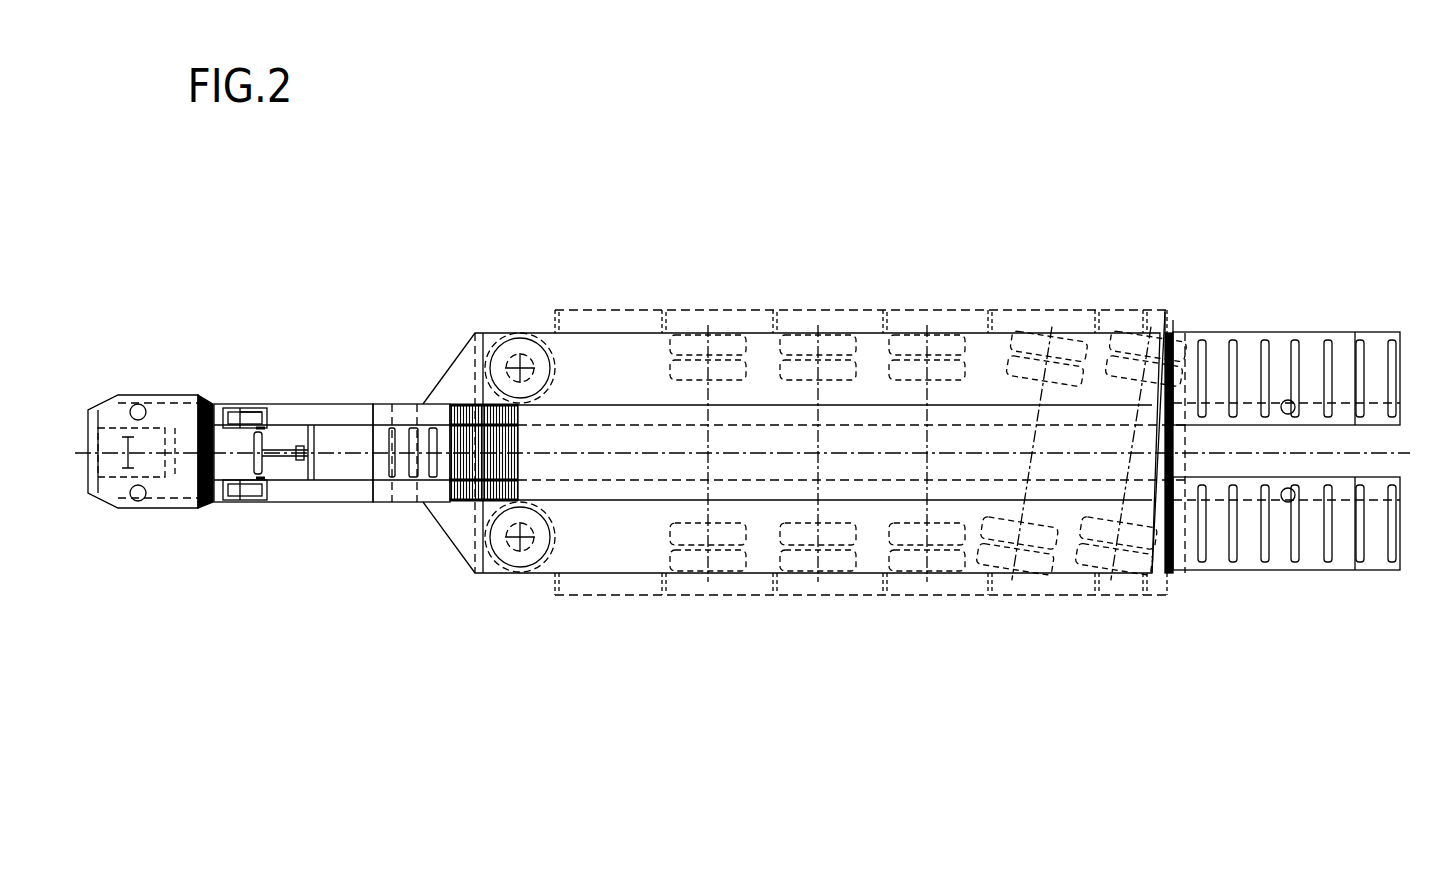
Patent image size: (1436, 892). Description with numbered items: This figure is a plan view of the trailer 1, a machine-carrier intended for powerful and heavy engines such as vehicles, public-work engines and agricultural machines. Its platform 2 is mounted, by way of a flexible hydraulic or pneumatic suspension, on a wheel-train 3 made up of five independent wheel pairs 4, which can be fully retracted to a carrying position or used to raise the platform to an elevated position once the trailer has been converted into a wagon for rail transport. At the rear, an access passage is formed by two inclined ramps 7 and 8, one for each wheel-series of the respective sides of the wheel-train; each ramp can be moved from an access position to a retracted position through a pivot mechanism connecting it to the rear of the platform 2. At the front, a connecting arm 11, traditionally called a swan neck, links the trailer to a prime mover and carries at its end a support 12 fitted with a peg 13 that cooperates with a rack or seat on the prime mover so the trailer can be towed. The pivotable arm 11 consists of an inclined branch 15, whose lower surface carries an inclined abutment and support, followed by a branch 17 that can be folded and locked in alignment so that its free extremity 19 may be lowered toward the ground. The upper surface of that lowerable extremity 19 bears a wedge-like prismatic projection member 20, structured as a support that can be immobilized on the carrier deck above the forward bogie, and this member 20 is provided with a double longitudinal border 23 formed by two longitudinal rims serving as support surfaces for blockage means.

The trailer 1 is at (970, 290).
The platform 2 is at (635, 553).
The wheel-train 3 is at (1003, 613).
The wheel pairs 4 is at (750, 352).
The inclined ramp 7 is at (1312, 553).
The inclined ramp 8 is at (1278, 353).
The connecting arm 11 is at (342, 512).
The support 12 is at (152, 463).
The peg 13 is at (117, 455).
The inclined branch 15 is at (405, 400).
The branch 17 is at (318, 414).
The free extremity 19 is at (194, 391).
The wedge-like prismatic projection member 20 is at (117, 396).
The double longitudinal border 23 is at (143, 403).